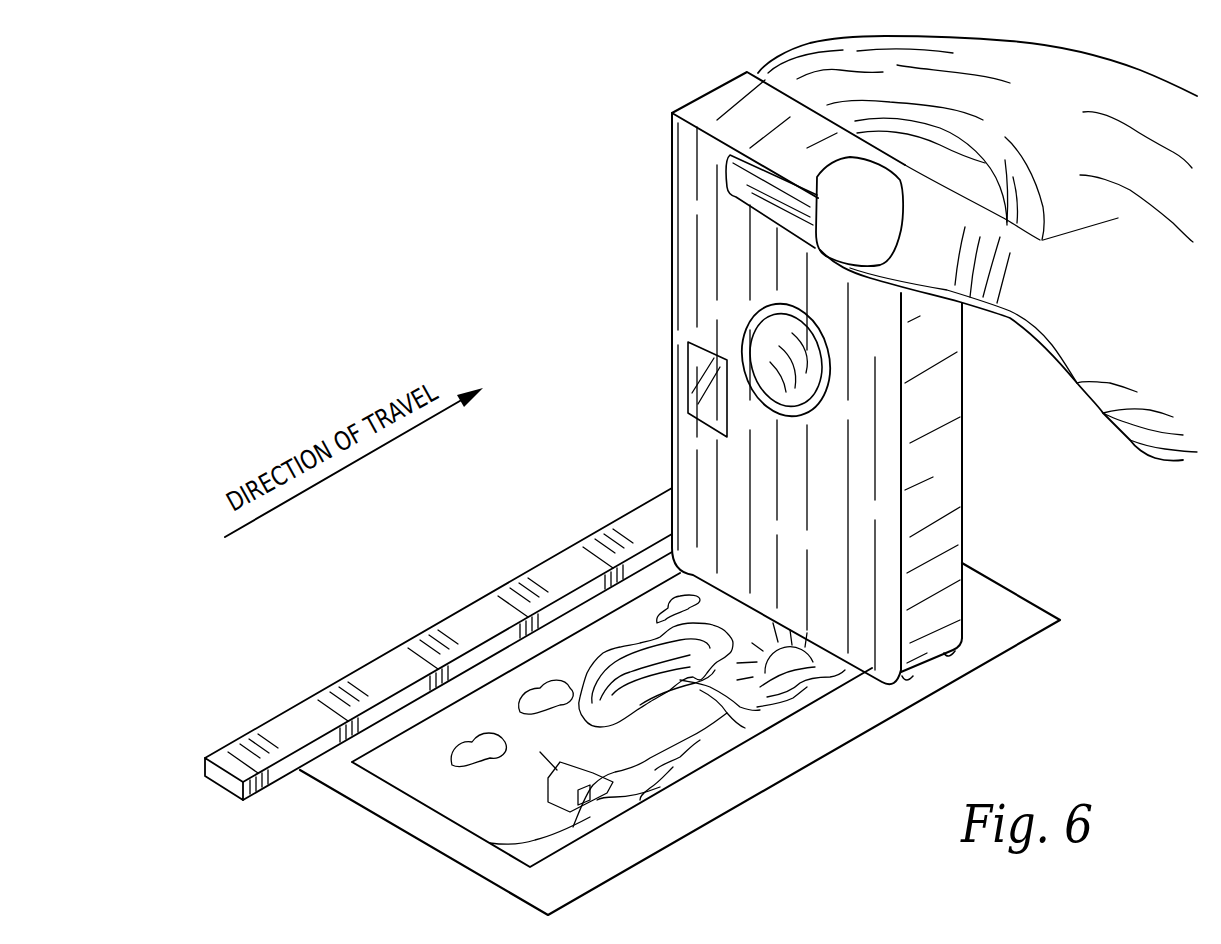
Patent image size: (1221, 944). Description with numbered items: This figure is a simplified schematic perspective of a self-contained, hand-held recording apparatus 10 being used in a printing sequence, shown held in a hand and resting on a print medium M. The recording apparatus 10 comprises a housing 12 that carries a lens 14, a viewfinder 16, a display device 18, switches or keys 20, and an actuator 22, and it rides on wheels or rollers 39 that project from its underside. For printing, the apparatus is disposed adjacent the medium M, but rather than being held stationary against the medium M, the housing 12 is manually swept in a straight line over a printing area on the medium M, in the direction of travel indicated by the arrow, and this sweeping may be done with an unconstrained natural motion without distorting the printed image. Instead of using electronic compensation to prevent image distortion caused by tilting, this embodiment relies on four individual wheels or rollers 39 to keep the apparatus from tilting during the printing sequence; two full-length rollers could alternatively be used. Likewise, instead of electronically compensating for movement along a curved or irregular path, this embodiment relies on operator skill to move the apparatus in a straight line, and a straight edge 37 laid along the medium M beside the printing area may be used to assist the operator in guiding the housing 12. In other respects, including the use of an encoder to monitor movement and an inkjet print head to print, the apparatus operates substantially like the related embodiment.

The recording apparatus 10 is at (688, 96).
The housing 12 is at (672, 268).
The lens 14 is at (770, 335).
The viewfinder 16 is at (707, 397).
The display device 18 is at (962, 473).
The switches or keys 20 is at (962, 540).
The actuator 22 is at (760, 200).
The straight edge 37 is at (377, 672).
The wheels or rollers 39 is at (907, 676).
The medium M is at (1011, 618).